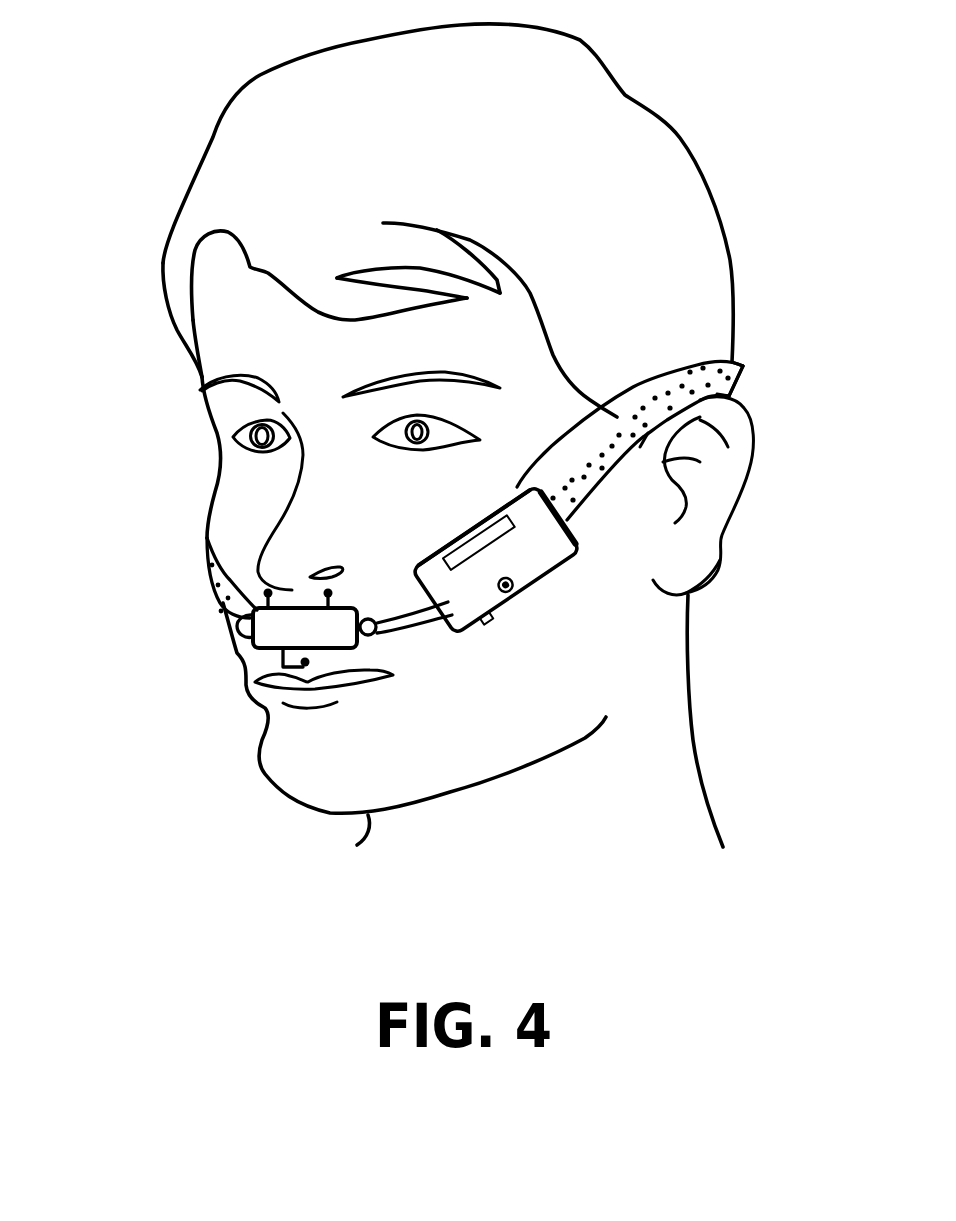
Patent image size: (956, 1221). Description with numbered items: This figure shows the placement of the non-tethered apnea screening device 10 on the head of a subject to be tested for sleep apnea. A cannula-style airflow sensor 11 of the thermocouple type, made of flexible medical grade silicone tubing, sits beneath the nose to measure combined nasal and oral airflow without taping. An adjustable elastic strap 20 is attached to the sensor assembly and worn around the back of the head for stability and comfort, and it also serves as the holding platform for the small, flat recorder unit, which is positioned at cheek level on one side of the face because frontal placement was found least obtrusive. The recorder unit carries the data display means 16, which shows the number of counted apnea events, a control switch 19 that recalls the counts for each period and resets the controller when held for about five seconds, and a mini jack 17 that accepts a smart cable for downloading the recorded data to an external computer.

The apnea screening device 10 is at (214, 846).
The airflow sensor 11 is at (237, 632).
The data display means 16 is at (586, 403).
The mini jack 17 is at (490, 622).
The control switch 19 is at (526, 587).
The adjustable elastic strap 20 is at (730, 378).